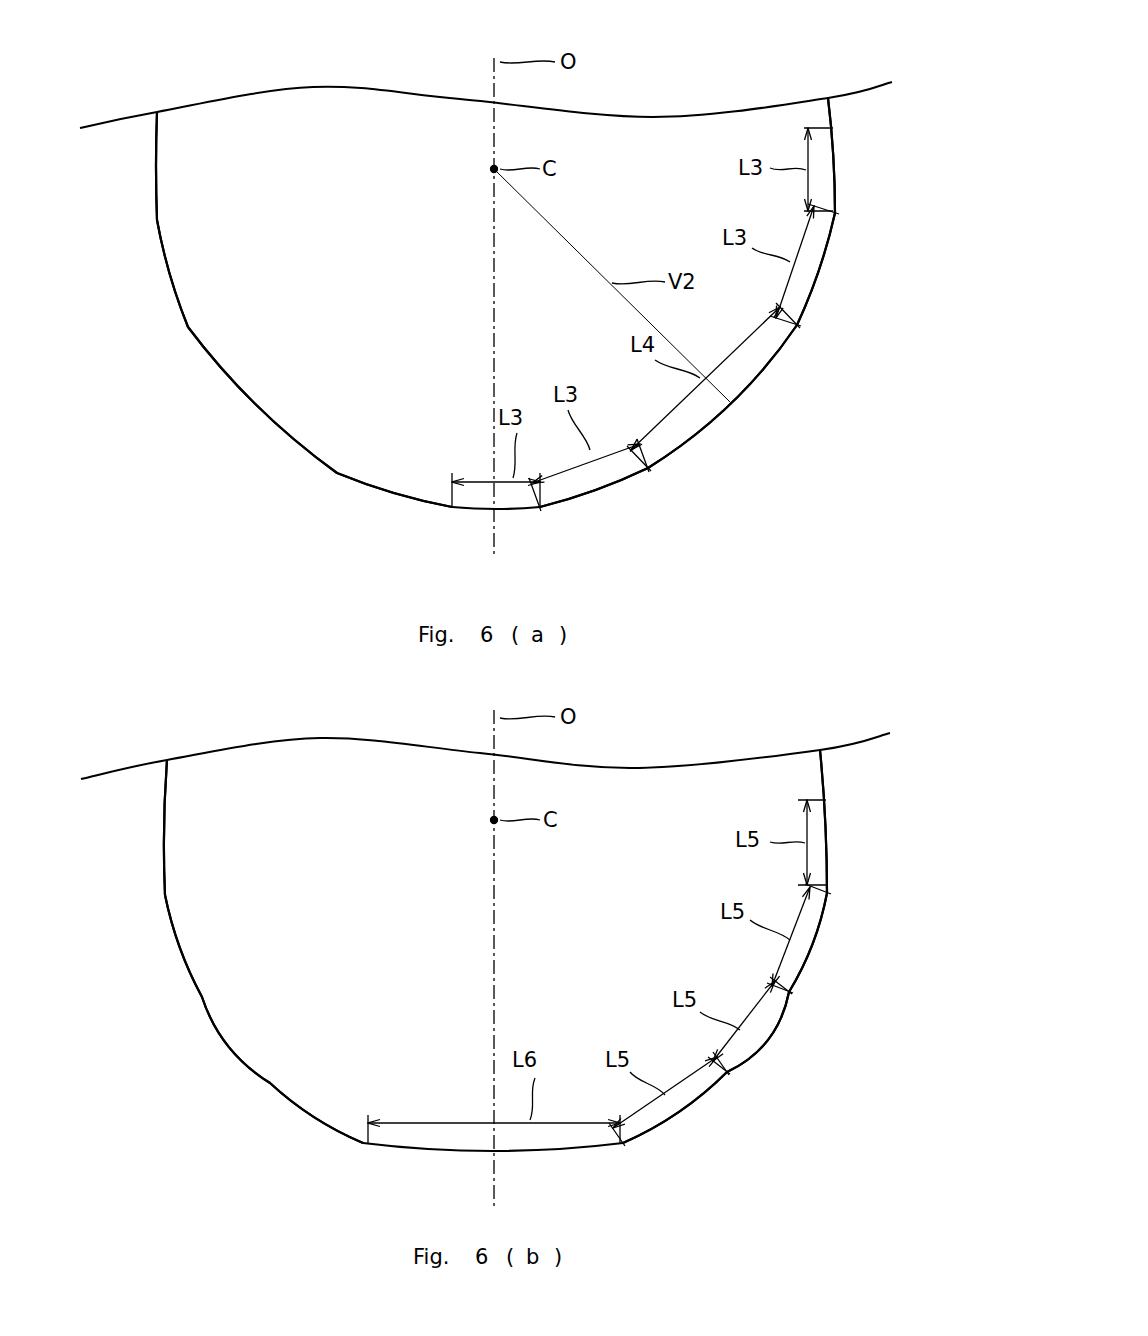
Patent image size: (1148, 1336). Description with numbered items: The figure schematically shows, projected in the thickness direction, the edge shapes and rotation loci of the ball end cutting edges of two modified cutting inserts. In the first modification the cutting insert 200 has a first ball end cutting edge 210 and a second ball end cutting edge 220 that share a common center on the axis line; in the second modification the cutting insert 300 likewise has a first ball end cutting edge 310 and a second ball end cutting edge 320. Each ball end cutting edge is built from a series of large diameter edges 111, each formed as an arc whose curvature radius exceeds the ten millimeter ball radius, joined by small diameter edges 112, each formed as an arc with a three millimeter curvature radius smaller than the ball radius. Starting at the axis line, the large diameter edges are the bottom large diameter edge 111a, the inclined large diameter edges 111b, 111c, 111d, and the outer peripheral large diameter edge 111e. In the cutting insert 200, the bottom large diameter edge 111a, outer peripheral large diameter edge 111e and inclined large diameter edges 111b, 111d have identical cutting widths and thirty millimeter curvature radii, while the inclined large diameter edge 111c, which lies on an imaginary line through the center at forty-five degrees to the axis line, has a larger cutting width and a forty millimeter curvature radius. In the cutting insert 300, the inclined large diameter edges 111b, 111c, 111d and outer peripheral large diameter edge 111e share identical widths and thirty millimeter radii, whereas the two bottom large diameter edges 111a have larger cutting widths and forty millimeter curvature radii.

In FIG. 6a, the cutting insert 200 is at (803, 83).
In FIG. 6b, the cutting insert 300 is at (770, 723).
In FIG. 6a, the first ball end cutting edge 210 is at (785, 517).
In FIG. 6a, the second ball end cutting edge 220 is at (190, 520).
In FIG. 6b, the first ball end cutting edge 310 is at (722, 1190).
In FIG. 6b, the second ball end cutting edge 320 is at (160, 1168).
In FIG. 6a, the large diameter edge 111 is at (499, 342).
In FIG. 6b, the large diameter edge 111 is at (499, 990).
In FIG. 6a, the bottom large diameter edge 111a is at (470, 510).
In FIG. 6b, the bottom large diameter edge 111a is at (438, 1155).
In FIG. 6a, the inclined large diameter edge 111b is at (388, 500).
In FIG. 6b, the inclined large diameter edge 111b is at (310, 1120).
In FIG. 6a, the inclined large diameter edge 111c is at (258, 410).
In FIG. 6b, the inclined large diameter edge 111c is at (233, 1045).
In FIG. 6a, the inclined large diameter edge 111d is at (170, 275).
In FIG. 6b, the inclined large diameter edge 111d is at (182, 952).
In FIG. 6a, the outer peripheral large diameter edge 111e is at (155, 170).
In FIG. 6b, the outer peripheral large diameter edge 111e is at (160, 822).
In FIG. 6a, the small diameter edge 112 is at (155, 222).
In FIG. 6b, the small diameter edge 112 is at (163, 900).